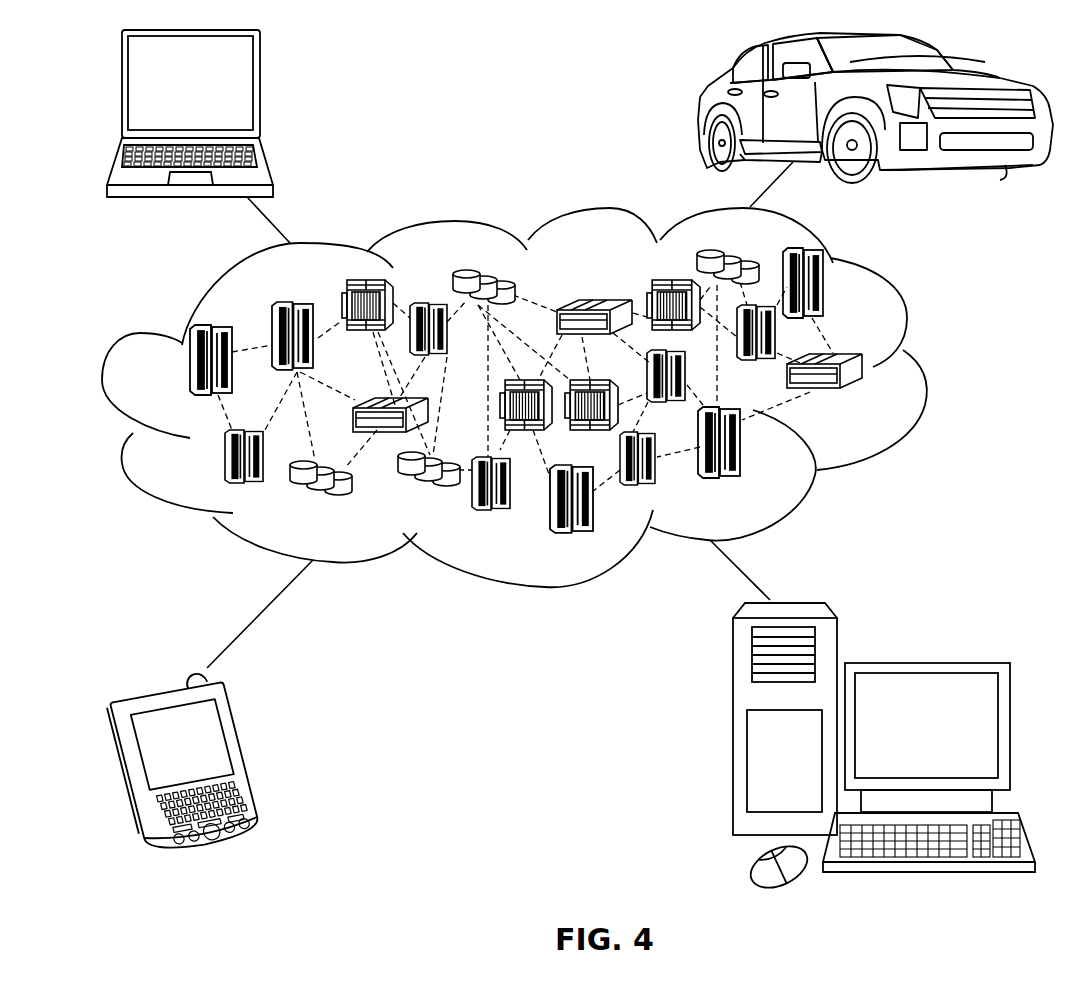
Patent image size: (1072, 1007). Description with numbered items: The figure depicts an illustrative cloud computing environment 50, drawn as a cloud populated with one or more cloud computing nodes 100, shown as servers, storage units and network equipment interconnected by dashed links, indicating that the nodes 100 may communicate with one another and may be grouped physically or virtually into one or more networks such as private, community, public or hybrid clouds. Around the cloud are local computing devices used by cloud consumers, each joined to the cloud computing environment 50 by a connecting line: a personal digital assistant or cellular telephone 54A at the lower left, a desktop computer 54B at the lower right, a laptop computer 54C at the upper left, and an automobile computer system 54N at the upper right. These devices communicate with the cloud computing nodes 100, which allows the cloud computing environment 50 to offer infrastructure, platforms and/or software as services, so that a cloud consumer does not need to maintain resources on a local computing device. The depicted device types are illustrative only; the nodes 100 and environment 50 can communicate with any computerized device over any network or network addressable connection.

The cloud computing environment 50 is at (923, 367).
The cloud computing nodes 100 is at (866, 401).
The personal digital assistant or cellular telephone 54A is at (250, 755).
The desktop computer 54B is at (923, 660).
The laptop computer 54C is at (260, 92).
The automobile computer system 54N is at (702, 108).